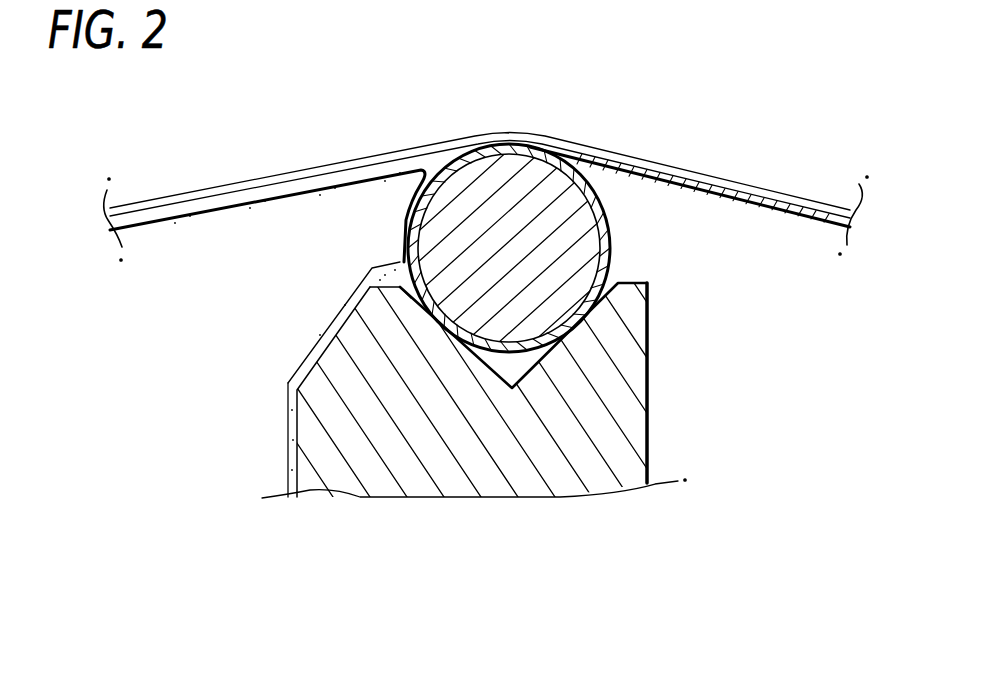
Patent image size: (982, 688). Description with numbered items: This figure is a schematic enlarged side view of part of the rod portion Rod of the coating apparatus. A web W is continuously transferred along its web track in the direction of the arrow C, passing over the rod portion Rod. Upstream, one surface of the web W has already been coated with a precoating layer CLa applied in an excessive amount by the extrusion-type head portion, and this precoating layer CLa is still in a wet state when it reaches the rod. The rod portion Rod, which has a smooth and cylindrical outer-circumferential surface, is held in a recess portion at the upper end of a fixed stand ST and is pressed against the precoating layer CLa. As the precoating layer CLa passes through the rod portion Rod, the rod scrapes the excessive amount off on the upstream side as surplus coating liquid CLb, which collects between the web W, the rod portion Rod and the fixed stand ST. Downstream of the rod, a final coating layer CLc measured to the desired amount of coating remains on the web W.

The web W is at (210, 188).
The precoating layer CLa is at (233, 207).
The surplus coating liquid CLb is at (372, 268).
The final coating layer CLc is at (764, 210).
The direction of transfer C is at (758, 165).
The rod portion Rod is at (612, 246).
The fixed stand ST is at (633, 376).